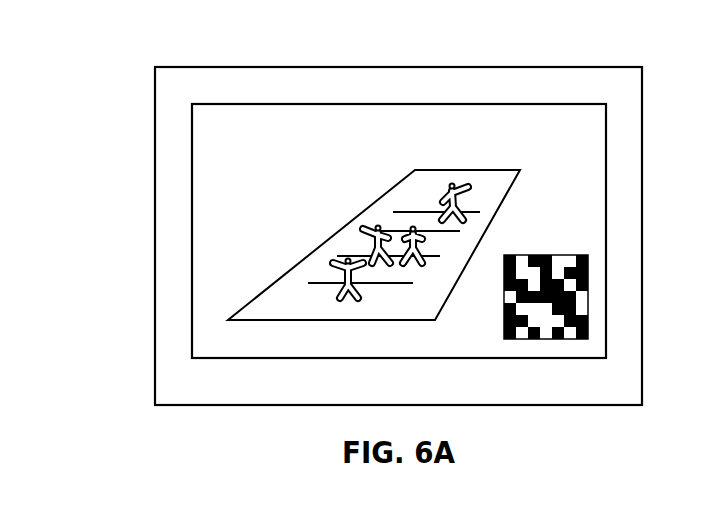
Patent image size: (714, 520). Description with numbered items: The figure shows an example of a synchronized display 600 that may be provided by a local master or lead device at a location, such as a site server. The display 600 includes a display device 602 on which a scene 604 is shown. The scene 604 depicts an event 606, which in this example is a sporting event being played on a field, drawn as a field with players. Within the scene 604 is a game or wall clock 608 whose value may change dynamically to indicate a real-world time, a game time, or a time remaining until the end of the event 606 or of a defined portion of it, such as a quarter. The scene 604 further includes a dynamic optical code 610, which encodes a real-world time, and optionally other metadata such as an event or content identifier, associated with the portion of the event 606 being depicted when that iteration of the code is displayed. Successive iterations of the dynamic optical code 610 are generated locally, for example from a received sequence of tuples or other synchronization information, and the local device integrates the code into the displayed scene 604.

The display 600 is at (128, 62).
The display device 602 is at (155, 192).
The scene 604 is at (192, 272).
The event 606 is at (293, 270).
The game (or wall) clock 608 is at (287, 132).
The dynamic optical code 610 is at (535, 256).